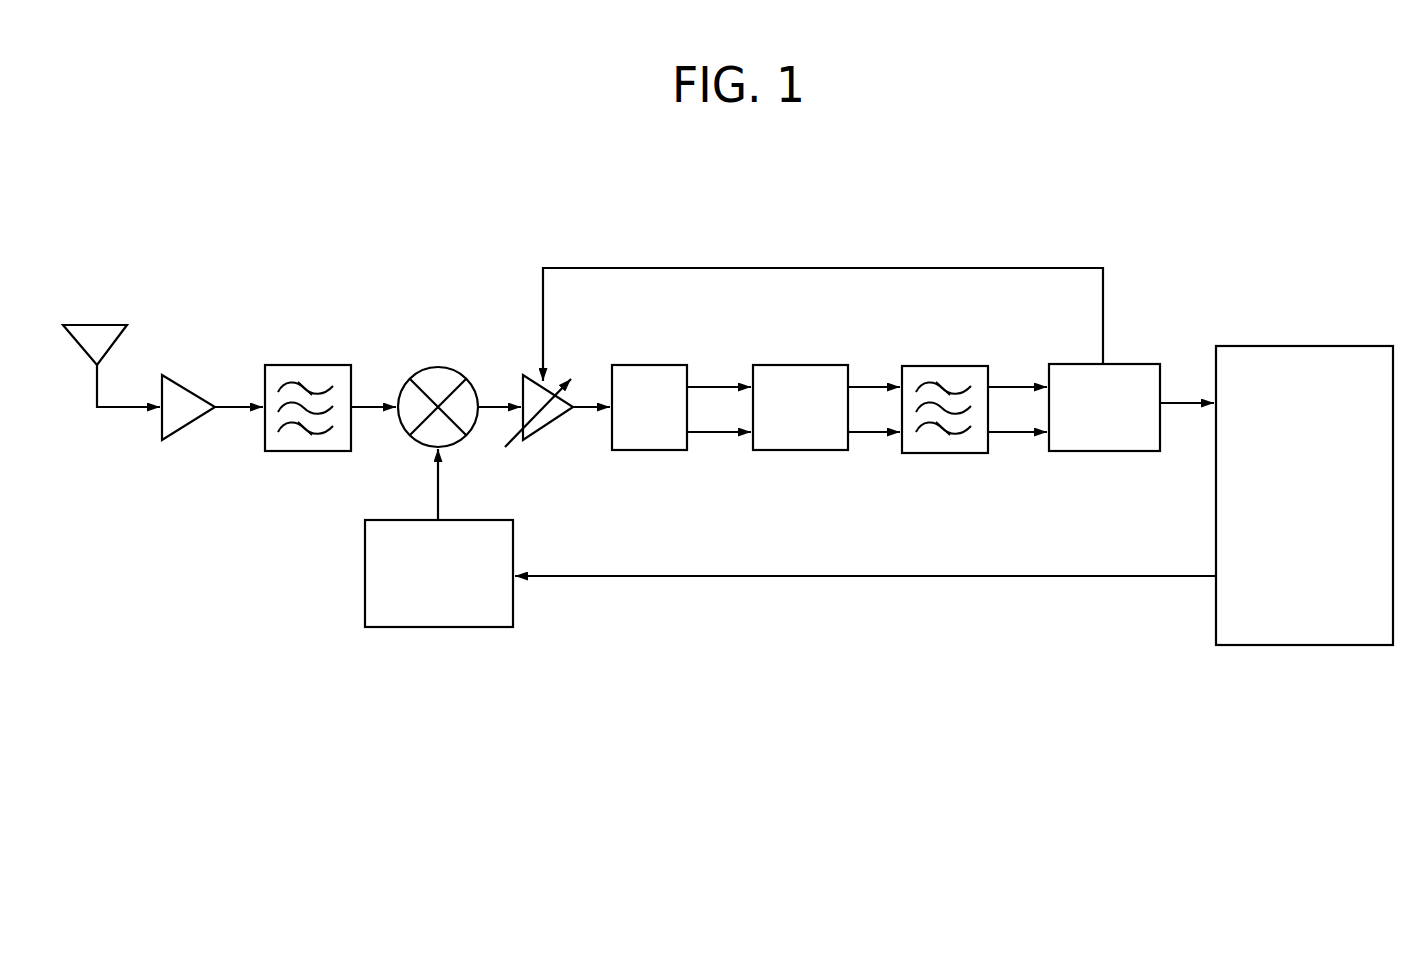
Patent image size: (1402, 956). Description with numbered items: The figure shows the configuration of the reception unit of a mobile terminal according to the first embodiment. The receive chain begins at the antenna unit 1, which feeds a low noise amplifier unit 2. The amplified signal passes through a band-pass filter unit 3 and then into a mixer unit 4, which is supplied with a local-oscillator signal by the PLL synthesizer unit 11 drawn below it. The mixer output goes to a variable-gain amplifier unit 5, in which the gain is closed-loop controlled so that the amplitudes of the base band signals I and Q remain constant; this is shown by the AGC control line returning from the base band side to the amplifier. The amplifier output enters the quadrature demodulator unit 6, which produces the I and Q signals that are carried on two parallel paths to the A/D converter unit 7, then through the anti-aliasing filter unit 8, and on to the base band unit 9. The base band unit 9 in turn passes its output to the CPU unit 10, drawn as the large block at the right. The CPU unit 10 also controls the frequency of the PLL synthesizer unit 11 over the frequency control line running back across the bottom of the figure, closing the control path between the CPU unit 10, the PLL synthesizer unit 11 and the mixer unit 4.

The antenna unit 1 is at (107, 325).
The low noise amplifier unit 2 is at (173, 440).
The band-pass filter unit 3 is at (287, 365).
The mixer unit 4 is at (443, 367).
The variable-gain amplifier unit 5 is at (540, 437).
The quadrature demodulator unit 6 is at (658, 365).
The A/D converter unit 7 is at (810, 365).
The anti-aliasing filter unit 8 is at (952, 366).
The base band unit 9 is at (1138, 364).
The CPU unit 10 is at (1295, 346).
The PLL synthesizer unit 11 is at (393, 627).